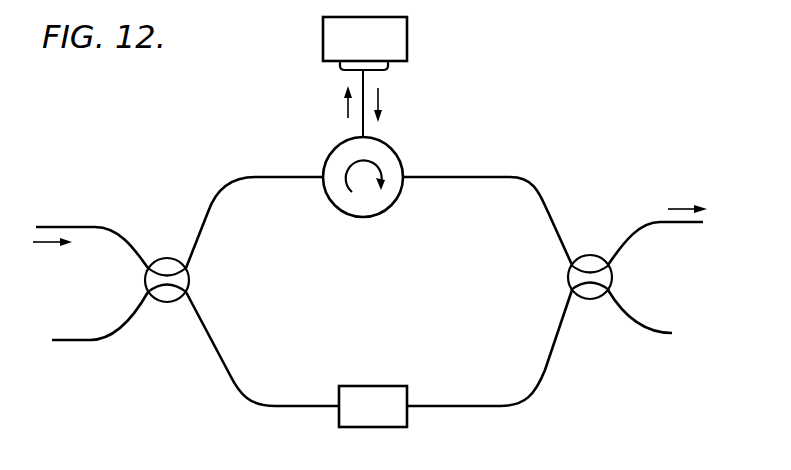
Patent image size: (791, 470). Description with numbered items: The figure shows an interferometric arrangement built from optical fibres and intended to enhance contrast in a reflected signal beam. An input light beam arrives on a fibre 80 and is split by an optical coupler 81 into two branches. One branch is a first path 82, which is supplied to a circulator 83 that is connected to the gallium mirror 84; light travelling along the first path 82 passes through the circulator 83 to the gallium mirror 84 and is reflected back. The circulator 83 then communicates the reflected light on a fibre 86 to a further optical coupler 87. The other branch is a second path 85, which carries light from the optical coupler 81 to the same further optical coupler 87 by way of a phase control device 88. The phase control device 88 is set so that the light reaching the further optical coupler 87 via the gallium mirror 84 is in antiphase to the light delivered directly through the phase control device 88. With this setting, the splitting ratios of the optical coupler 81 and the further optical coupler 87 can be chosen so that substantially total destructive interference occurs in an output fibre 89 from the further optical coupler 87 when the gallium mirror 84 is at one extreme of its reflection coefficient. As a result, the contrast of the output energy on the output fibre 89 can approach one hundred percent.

The fibre 80 is at (83, 226).
The optical coupler 81 is at (142, 276).
The first path 82 is at (257, 175).
The circulator 83 is at (398, 162).
The gallium mirror 84 is at (392, 68).
The second path 85 is at (215, 347).
The fibre 86 is at (510, 175).
The further optical coupler 87 is at (592, 300).
The phase control device 88 is at (370, 386).
The output fibre 89 is at (653, 226).